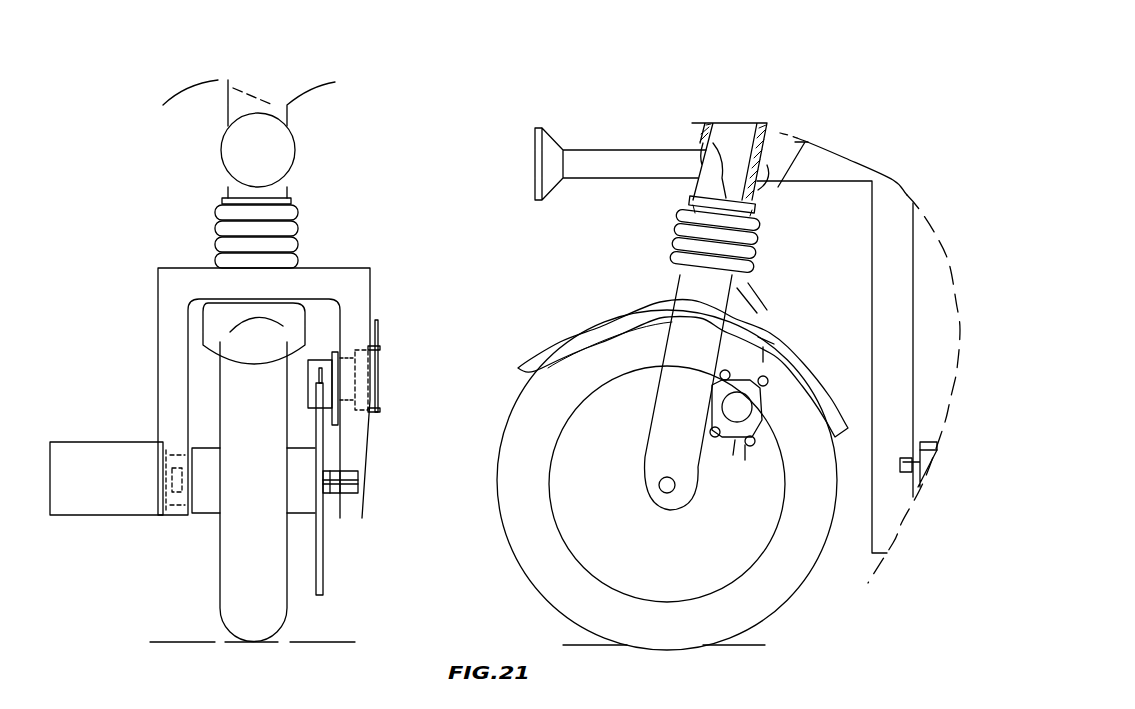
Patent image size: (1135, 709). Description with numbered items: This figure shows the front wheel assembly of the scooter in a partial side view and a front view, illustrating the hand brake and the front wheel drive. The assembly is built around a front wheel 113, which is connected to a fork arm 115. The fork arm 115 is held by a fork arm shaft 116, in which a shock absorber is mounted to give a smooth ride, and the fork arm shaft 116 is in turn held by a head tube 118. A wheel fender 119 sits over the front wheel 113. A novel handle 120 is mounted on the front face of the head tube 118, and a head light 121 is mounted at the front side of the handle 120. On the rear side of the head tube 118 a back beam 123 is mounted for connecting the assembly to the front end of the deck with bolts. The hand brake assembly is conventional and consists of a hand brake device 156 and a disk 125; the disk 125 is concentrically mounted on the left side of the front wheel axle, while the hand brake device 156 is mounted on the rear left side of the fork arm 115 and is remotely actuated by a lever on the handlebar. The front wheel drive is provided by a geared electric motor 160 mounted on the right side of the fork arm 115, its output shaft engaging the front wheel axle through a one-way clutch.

The front wheel 113 is at (288, 577).
The fork arm 115 is at (313, 268).
The fork arm shaft 116 is at (760, 135).
The head tube 118 is at (758, 172).
The wheel fender 119 is at (307, 322).
The handle 120 is at (630, 150).
The head light 121 is at (292, 165).
The back beam 123 is at (872, 230).
The disk 125 is at (322, 553).
The hand brake device 156 is at (348, 403).
The geared electric motor 160 is at (117, 440).